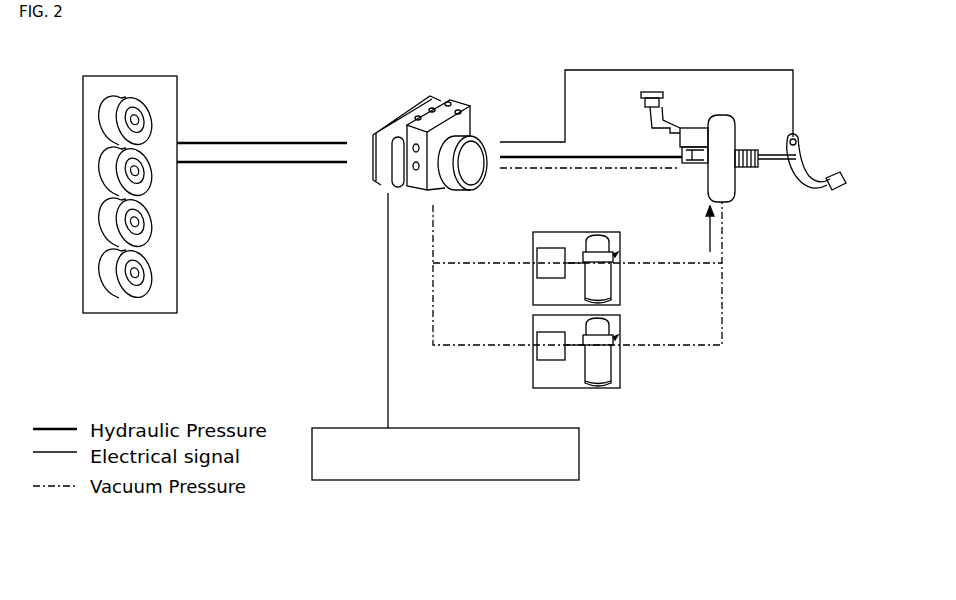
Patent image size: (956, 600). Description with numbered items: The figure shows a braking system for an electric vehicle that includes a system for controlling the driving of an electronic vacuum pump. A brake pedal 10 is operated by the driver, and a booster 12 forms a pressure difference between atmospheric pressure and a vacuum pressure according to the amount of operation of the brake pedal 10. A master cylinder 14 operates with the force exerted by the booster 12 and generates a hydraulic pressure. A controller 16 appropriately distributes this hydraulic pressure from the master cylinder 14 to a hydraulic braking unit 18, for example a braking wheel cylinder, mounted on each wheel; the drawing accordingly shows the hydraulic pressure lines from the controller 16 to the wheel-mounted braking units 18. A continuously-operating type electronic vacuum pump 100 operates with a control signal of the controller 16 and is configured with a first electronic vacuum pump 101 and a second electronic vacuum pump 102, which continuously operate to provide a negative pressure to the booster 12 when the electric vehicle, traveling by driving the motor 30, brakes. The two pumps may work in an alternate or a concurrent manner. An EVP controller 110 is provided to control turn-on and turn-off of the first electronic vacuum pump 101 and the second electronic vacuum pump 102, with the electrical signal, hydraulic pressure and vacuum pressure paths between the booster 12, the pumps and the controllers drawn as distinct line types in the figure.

The brake pedal 10 is at (800, 168).
The booster 12 is at (727, 129).
The master cylinder 14 is at (698, 160).
The controller 16 is at (458, 97).
The hydraulic braking unit 18 is at (112, 124).
The motor 30 is at (541, 481).
The continuously-operating type electronic vacuum pump 100 is at (753, 371).
The first electronic vacuum pump 101 is at (612, 286).
The second electronic vacuum pump 102 is at (612, 364).
The EVP controller 110 is at (545, 250).